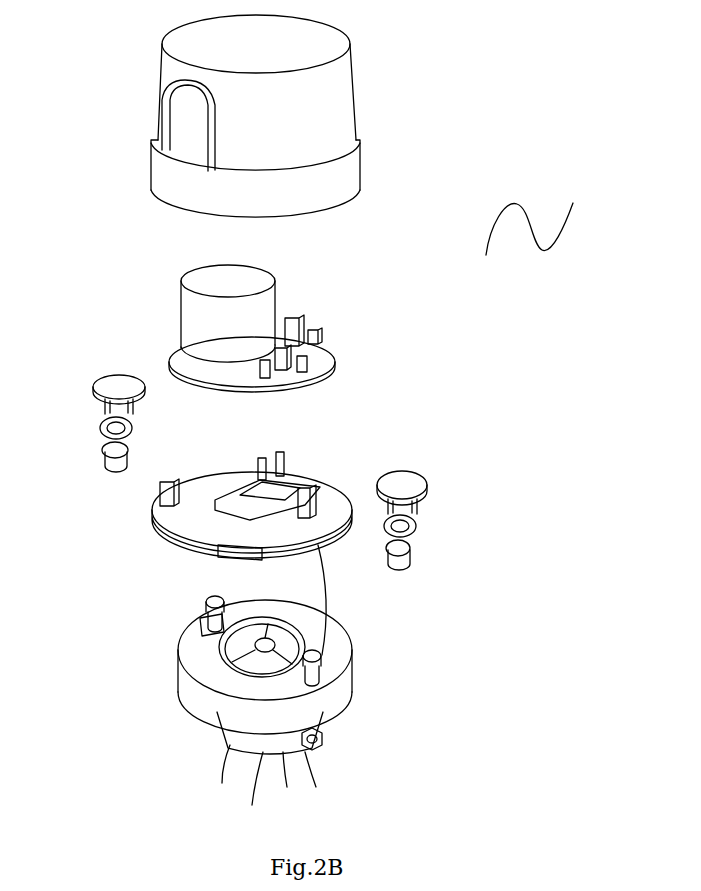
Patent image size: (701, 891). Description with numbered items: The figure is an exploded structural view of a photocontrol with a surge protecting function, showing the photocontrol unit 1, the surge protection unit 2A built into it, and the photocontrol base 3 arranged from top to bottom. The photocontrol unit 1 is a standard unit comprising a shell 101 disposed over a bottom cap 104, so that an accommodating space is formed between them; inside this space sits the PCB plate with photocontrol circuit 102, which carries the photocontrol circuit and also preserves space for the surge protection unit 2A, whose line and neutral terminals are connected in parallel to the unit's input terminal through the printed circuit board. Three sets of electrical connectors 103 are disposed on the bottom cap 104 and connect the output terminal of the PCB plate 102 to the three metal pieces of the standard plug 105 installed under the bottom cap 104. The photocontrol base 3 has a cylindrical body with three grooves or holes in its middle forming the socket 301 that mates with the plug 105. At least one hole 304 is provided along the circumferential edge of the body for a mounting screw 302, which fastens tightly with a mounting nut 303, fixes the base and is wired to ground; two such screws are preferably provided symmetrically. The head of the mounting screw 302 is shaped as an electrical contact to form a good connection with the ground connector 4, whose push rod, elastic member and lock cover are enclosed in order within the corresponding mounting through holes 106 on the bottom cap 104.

The photocontrol unit 1 is at (548, 220).
The shell 101 is at (330, 175).
The surge protection unit 2A is at (213, 320).
The PCB plate with photocontrol circuit 102 is at (322, 340).
The electrical connectors 103 is at (245, 478).
The bottom cap 104 is at (165, 529).
The plug 105 is at (220, 552).
The mounting through holes 106 is at (322, 497).
The photocontrol base 3 is at (355, 628).
The ground connector 4 is at (438, 525).
The socket 301 is at (200, 628).
The mounting screw 302 is at (205, 603).
The mounting nut 303 is at (328, 737).
The hole 304 is at (247, 662).